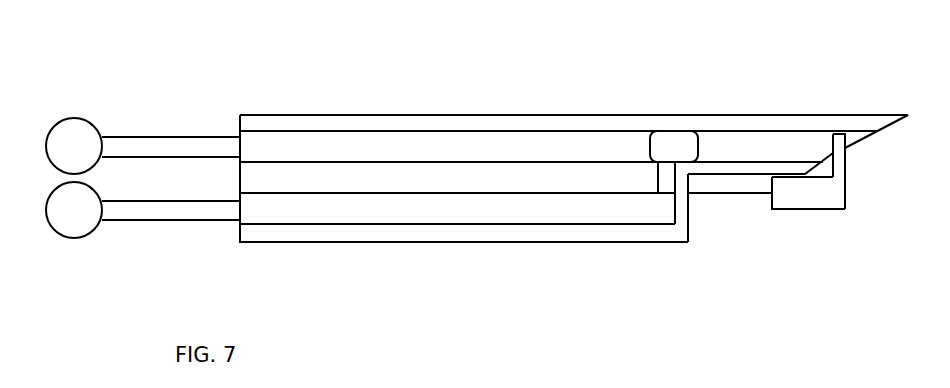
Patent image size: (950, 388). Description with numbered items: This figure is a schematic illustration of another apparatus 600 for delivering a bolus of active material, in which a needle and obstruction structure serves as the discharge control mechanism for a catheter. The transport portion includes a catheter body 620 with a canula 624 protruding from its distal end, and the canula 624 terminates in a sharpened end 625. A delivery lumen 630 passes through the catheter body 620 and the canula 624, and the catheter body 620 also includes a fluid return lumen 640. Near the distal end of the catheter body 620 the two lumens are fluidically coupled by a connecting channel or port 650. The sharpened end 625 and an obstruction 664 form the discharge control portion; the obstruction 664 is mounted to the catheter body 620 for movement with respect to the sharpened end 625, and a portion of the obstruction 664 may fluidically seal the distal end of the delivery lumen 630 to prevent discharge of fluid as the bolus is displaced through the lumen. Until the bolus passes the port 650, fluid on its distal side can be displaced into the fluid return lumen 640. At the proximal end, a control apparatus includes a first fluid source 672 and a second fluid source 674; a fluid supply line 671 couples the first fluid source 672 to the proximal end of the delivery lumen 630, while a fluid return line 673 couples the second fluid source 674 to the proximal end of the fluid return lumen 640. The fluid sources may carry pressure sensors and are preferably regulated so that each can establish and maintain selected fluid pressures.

The sensor assembly 600 is at (516, 66).
The catheter body 620 is at (417, 115).
The canula 624 is at (765, 115).
The sharpened end 625 is at (883, 115).
The delivery lumen 630 is at (322, 147).
The fluid return lumen 640 is at (338, 207).
The connecting channel or port 650 is at (668, 178).
The obstruction 664 is at (822, 193).
The fluid supply line 671 is at (170, 145).
The first fluid source 672 is at (72, 138).
The fluid return line 673 is at (172, 212).
The second fluid source 674 is at (78, 212).